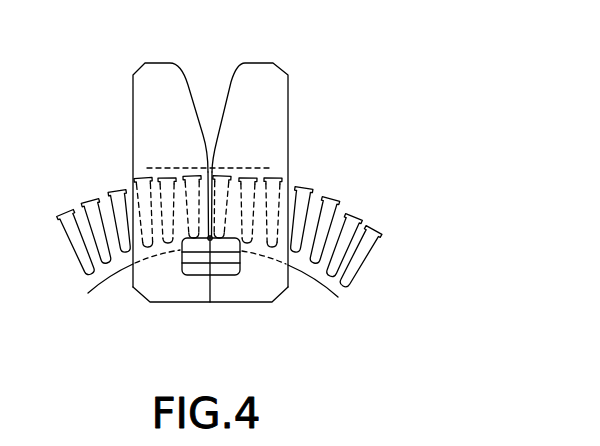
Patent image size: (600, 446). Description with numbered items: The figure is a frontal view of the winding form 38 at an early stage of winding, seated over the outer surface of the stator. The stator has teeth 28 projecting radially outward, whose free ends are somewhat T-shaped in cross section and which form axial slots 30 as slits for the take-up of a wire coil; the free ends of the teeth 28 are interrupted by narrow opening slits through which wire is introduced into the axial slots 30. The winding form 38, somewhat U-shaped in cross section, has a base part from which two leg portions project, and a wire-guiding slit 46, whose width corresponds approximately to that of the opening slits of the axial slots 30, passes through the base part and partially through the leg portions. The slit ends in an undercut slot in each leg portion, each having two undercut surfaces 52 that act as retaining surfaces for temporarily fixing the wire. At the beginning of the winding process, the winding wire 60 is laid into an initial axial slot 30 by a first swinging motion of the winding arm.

The winding form 38 is at (280, 87).
The wire-guiding slit 46 is at (213, 190).
The teeth 28 is at (323, 220).
The axial slots 30 is at (352, 241).
The undercut surfaces 52 is at (182, 258).
The winding wire 60 is at (210, 302).